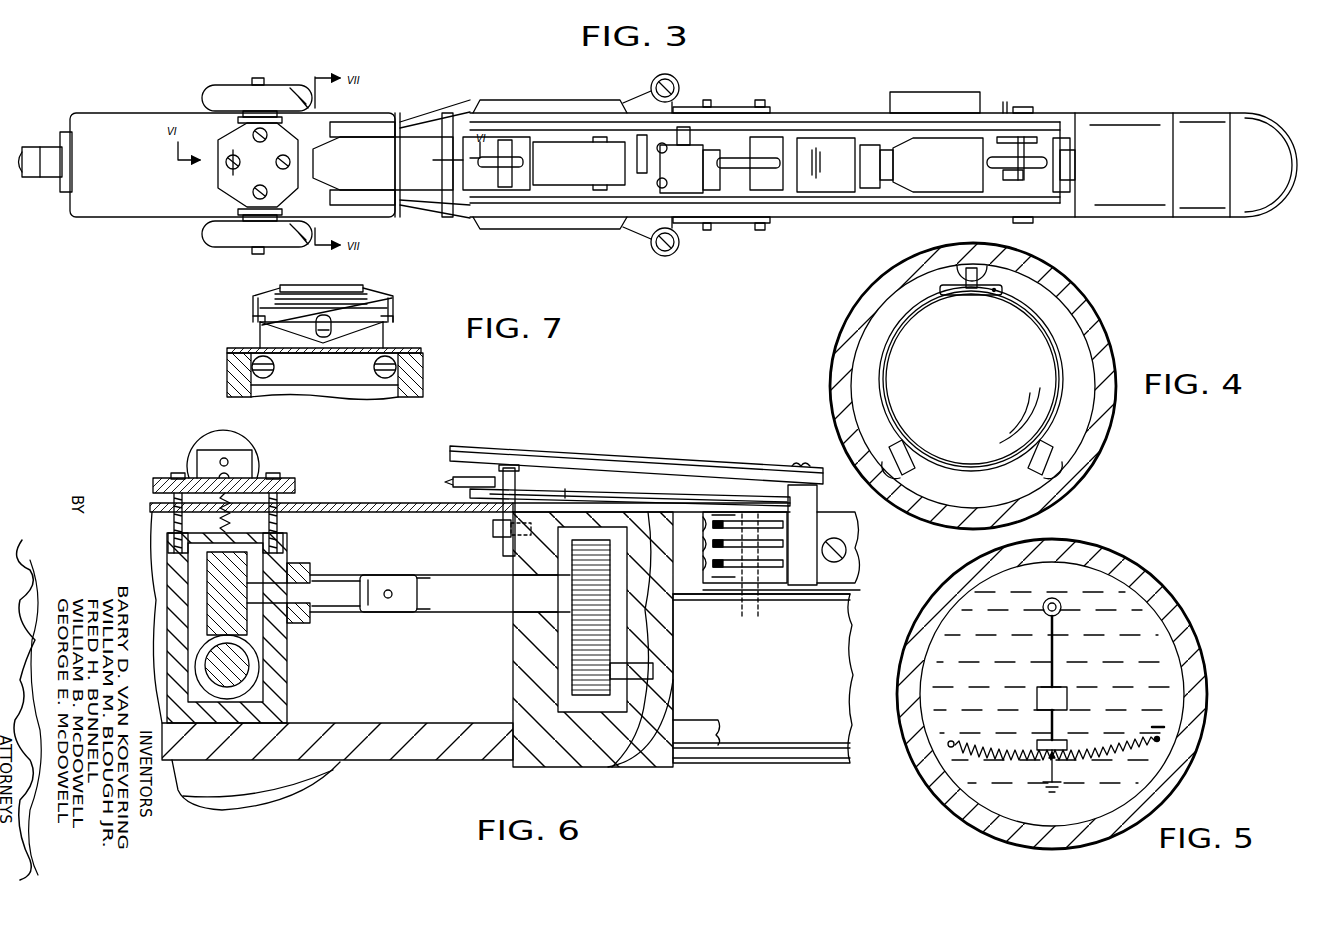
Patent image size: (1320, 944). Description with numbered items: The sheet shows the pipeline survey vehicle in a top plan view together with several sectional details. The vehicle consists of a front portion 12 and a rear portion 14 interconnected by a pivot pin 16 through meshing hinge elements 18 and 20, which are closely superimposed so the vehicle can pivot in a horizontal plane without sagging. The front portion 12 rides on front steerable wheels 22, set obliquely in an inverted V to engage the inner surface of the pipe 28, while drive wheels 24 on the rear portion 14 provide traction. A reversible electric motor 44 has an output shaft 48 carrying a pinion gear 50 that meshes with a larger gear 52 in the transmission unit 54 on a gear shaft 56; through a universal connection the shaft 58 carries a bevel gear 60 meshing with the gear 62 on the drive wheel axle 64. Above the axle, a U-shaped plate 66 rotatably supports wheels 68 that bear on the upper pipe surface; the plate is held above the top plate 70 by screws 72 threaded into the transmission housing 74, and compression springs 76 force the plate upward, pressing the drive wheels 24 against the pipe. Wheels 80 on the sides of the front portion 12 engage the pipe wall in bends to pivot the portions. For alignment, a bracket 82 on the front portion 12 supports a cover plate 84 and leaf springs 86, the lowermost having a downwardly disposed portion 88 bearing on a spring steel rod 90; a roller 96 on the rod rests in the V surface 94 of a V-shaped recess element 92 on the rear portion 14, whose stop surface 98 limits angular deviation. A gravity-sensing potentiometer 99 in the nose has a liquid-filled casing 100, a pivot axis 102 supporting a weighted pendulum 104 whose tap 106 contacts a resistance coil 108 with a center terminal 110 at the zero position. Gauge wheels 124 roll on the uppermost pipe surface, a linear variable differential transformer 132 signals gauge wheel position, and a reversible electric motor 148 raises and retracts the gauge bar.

In FIG. 3, the front portion 12 is at (1100, 221).
In FIG. 4, the front portion 12 is at (971, 379).
In FIG. 3, the rear portion 14 is at (154, 220).
In FIG. 6, the pivot pin 16 is at (767, 598).
In FIG. 6, the hinge elements 18 is at (780, 548).
In FIG. 6, the hinge elements 20 is at (733, 553).
In FIG. 4, the front steerable wheels 22 is at (903, 462).
In FIG. 3, the drive wheels 24 is at (243, 236).
In FIG. 4, the pipe 28 is at (1093, 328).
In FIG. 6, the reversible electric motor 44 is at (808, 697).
In FIG. 6, the output shaft 48 is at (612, 670).
In FIG. 6, the pinion gear 50 is at (594, 690).
In FIG. 6, the larger gear 52 is at (520, 673).
In FIG. 6, the transmission unit 54 is at (518, 645).
In FIG. 6, the gear shaft 56 is at (496, 604).
In FIG. 6, the shaft 58 is at (348, 612).
In FIG. 6, the bevel gear 60 is at (248, 573).
In FIG. 6, the gear 62 is at (200, 652).
In FIG. 6, the drive wheel axle 64 is at (205, 673).
In FIG. 3, the plate 66 is at (232, 178).
In FIG. 6, the plate 66 is at (298, 485).
In FIG. 3, the wheels 68 is at (265, 142).
In FIG. 6, the wheels 68 is at (222, 430).
In FIG. 6, the top plate 70 is at (361, 503).
In FIG. 3, the screws 72 is at (232, 156).
In FIG. 6, the screws 72 is at (172, 476).
In FIG. 6, the transmission housing 74 is at (283, 638).
In FIG. 6, the compression springs 76 is at (150, 517).
In FIG. 3, the wheels 80 is at (680, 87).
In FIG. 6, the bracket 82 is at (810, 500).
In FIG. 3, the cover plate 84 is at (391, 159).
In FIG. 7, the cover plate 84 is at (336, 287).
In FIG. 6, the cover plate 84 is at (587, 455).
In FIG. 7, the leaf springs 86 is at (257, 310).
In FIG. 6, the downwardly disposed portion 88 is at (580, 485).
In FIG. 6, the spring steel rod 90 is at (650, 497).
In FIG. 7, the V-shaped recess element 92 is at (378, 336).
In FIG. 6, the V-shaped recess element 92 is at (497, 472).
In FIG. 7, the V surface 94 is at (253, 348).
In FIG. 7, the roller 96 is at (350, 322).
In FIG. 6, the roller 96 is at (517, 482).
In FIG. 7, the stop surface 98 is at (386, 326).
In FIG. 5, the potentiometer 99 is at (1122, 601).
In FIG. 5, the casing 100 is at (1190, 636).
In FIG. 5, the pivot axis 102 is at (1059, 598).
In FIG. 5, the weighted pendulum 104 is at (1054, 720).
In FIG. 5, the tap 106 is at (1066, 742).
In FIG. 5, the resistance coil 108 is at (1082, 760).
In FIG. 5, the center terminal 110 is at (1048, 768).
In FIG. 3, the gauge wheel 124 is at (1037, 150).
In FIG. 4, the gauge wheel 124 is at (988, 270).
In FIG. 3, the linear variable differential transformer 132 is at (678, 160).
In FIG. 3, the reversible electric motor 148 is at (938, 165).